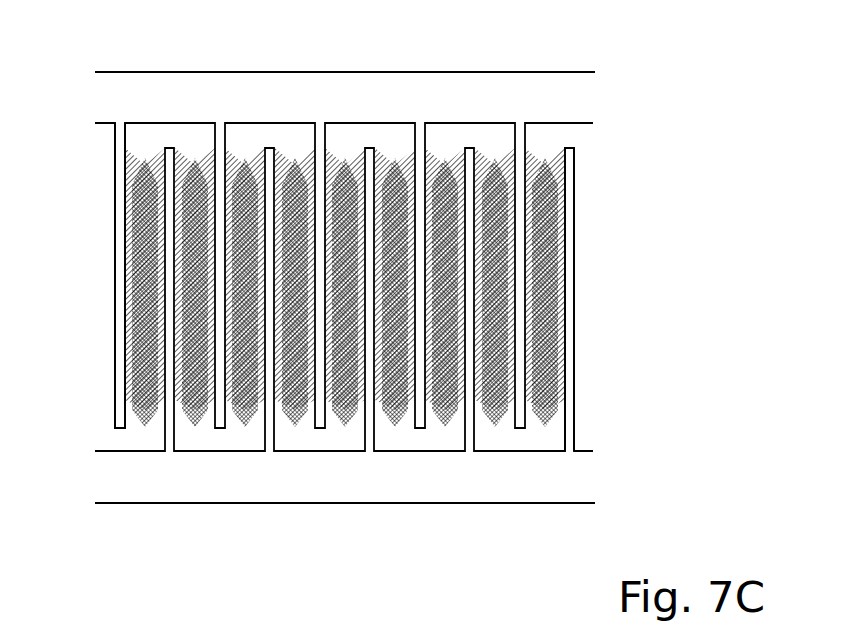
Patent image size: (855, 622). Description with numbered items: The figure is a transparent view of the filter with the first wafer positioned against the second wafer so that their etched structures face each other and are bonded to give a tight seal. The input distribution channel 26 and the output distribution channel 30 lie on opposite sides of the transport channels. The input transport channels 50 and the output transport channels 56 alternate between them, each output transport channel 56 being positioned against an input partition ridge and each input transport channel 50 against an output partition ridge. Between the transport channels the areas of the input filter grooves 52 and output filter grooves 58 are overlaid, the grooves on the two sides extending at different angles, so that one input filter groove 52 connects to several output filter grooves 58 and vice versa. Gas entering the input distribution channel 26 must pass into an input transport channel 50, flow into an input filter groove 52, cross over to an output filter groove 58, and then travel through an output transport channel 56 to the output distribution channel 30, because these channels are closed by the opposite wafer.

The input distribution channel 26 is at (175, 75).
The output distribution channel 30 is at (142, 495).
The input transport channel 50 is at (518, 136).
The input filter groove 52 is at (122, 255).
The output transport channel 56 is at (165, 148).
The output filter groove 58 is at (125, 297).